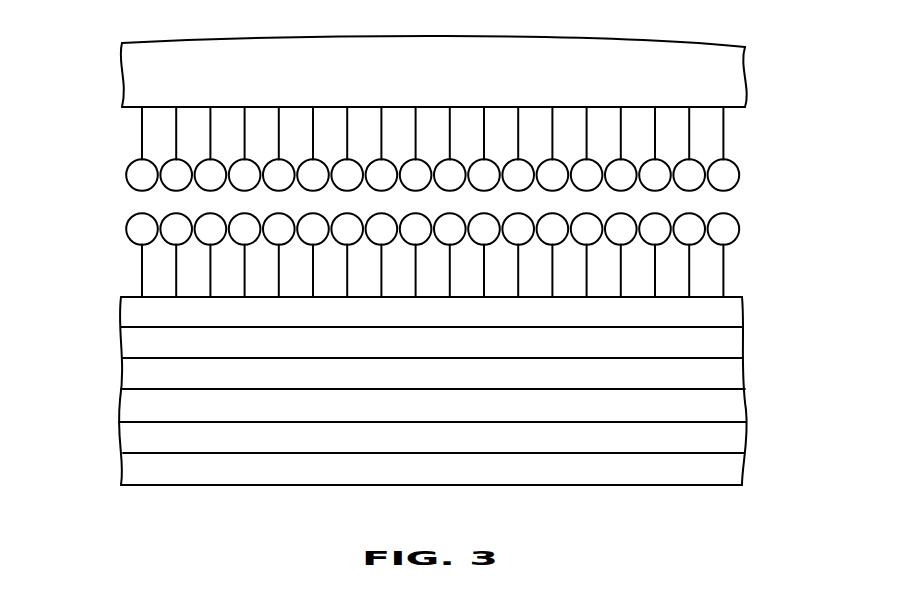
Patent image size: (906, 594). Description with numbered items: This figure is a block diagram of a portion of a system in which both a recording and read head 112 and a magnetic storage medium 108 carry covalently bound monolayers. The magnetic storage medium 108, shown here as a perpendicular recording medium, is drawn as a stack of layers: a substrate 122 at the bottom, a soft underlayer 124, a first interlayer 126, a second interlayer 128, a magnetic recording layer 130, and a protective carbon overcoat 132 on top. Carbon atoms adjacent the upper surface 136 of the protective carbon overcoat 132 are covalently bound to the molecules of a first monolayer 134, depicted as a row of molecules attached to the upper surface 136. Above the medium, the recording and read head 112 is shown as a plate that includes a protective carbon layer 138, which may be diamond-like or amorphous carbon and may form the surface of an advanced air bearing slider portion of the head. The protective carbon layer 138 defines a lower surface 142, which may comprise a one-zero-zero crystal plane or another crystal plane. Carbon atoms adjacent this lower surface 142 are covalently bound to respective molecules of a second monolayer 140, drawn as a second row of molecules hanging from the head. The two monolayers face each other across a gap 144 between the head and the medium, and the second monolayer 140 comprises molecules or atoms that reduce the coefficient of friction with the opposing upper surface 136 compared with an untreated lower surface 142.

The magnetic storage medium 108 is at (419, 368).
The recording and read head 112 is at (416, 65).
The substrate 122 is at (733, 469).
The soft underlayer 124 is at (734, 438).
The first interlayer 126 is at (734, 406).
The second interlayer 128 is at (733, 375).
The magnetic recording layer 130 is at (733, 344).
The protective carbon overcoat 132 is at (733, 313).
The first monolayer 134 is at (752, 215).
The upper surface 136 is at (132, 296).
The protective carbon layer 138 is at (717, 78).
The second monolayer 140 is at (752, 108).
The lower surface 142 is at (136, 108).
The gap between electrode arrays 144 is at (118, 192).